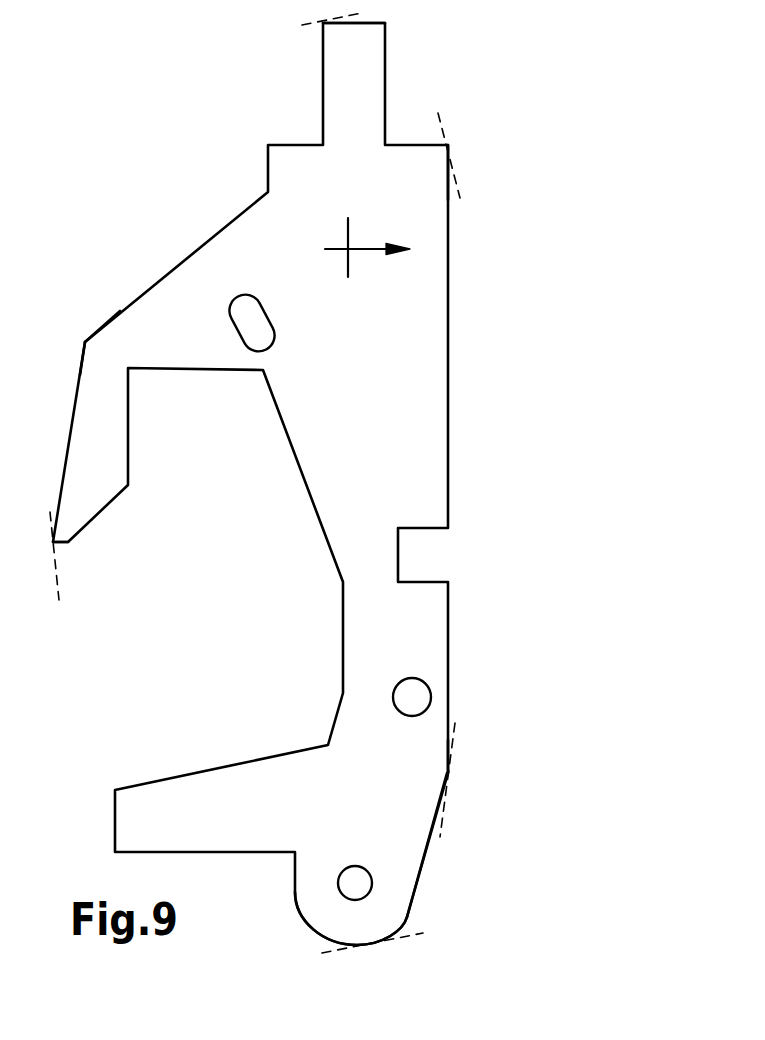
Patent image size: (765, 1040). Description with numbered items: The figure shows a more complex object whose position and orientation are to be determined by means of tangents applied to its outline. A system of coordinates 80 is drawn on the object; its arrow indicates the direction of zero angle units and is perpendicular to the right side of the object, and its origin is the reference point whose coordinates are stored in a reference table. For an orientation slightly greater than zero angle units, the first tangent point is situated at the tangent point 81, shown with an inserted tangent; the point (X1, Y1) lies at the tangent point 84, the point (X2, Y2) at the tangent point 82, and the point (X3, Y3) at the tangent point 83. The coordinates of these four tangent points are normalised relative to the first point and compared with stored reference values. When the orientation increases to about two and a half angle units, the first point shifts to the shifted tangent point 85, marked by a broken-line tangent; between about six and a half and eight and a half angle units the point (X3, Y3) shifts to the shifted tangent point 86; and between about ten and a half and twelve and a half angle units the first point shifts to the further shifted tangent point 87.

The system of coordinates 80 is at (350, 248).
The tangent point (X0, Y0) at small orientation 81 is at (448, 147).
The tangent point (X2, Y2) 82 is at (325, 23).
The tangent point (X3, Y3) 83 is at (53, 542).
The tangent point (X1, Y1) 84 is at (362, 933).
The shifted tangent point (X0, Y0) 85 is at (448, 773).
The shifted tangent point (X3, Y3) 86 is at (85, 340).
The further shifted tangent point (X0, Y0) 87 is at (407, 918).